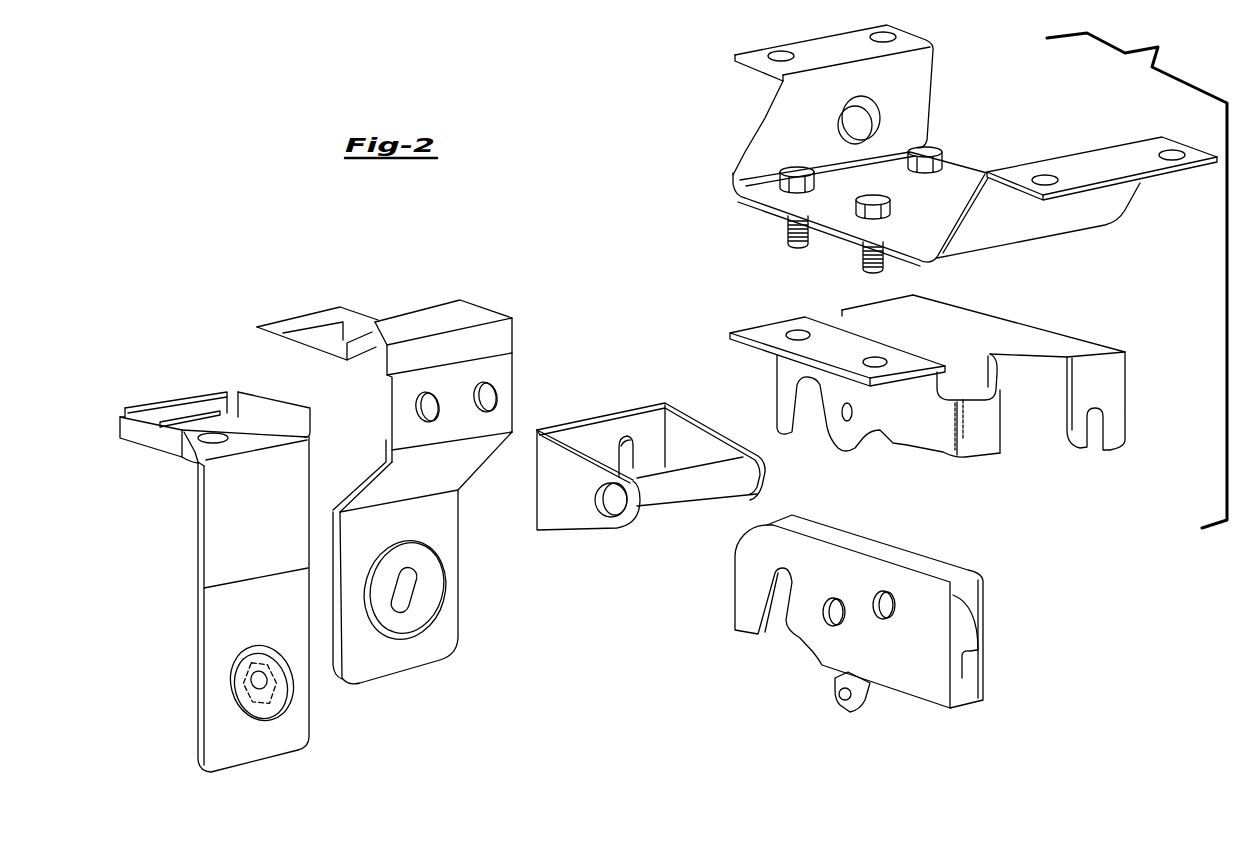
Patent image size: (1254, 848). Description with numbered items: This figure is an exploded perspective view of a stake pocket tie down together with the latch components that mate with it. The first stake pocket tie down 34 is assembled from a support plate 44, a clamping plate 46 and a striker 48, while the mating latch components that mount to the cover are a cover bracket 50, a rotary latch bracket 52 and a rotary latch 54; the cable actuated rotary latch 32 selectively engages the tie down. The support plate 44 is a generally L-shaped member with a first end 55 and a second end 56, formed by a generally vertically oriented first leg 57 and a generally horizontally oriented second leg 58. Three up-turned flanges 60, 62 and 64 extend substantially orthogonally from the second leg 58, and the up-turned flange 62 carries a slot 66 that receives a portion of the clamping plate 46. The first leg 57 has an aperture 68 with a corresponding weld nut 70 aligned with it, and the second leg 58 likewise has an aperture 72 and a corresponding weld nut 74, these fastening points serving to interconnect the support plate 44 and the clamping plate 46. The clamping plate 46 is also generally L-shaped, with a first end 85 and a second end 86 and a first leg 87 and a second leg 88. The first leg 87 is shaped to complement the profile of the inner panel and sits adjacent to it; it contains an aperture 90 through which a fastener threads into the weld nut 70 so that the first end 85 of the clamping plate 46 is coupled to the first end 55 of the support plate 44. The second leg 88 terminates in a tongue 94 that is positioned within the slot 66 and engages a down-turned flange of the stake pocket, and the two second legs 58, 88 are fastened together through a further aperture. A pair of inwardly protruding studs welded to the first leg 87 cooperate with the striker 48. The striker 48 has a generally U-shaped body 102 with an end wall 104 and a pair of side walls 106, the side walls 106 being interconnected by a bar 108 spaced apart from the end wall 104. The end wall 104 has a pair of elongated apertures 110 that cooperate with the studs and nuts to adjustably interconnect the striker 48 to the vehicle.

The cable actuated rotary latch 32 is at (926, 145).
The first stake pocket tie down 34 is at (363, 460).
The support plate 44 is at (203, 586).
The clamping plate 46 is at (363, 477).
The striker 48 is at (651, 476).
The cover bracket 50 is at (1142, 124).
The rotary latch bracket 52 is at (1139, 352).
The rotary latch 54 is at (1035, 564).
The first end 55 is at (225, 620).
The second end 56 is at (190, 438).
The first leg 57 is at (215, 604).
The second leg 58 is at (215, 430).
The up-turned flange 60 is at (263, 404).
The up-turned flange 62 is at (146, 412).
The up-turned flange 64 is at (137, 437).
The slot 66 is at (175, 420).
The aperture 68 is at (260, 686).
The weld nut 70 is at (258, 684).
The aperture 72 is at (233, 441).
The weld nut 74 is at (192, 463).
The first end 85 is at (422, 569).
The second end 86 is at (296, 287).
The first leg 87 is at (447, 519).
The second leg 88 is at (382, 318).
The aperture 90 is at (403, 605).
The tongue 94 is at (268, 318).
The U-shaped body 102 is at (651, 453).
The end wall 104 is at (577, 437).
The side wall 106 is at (722, 440).
The bar 108 is at (697, 486).
The elongated aperture 110 is at (634, 437).